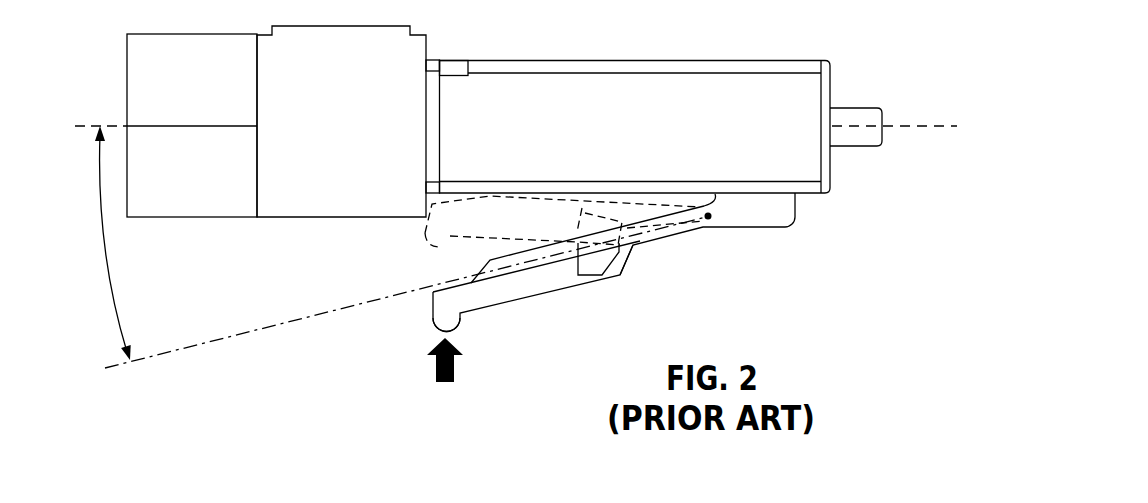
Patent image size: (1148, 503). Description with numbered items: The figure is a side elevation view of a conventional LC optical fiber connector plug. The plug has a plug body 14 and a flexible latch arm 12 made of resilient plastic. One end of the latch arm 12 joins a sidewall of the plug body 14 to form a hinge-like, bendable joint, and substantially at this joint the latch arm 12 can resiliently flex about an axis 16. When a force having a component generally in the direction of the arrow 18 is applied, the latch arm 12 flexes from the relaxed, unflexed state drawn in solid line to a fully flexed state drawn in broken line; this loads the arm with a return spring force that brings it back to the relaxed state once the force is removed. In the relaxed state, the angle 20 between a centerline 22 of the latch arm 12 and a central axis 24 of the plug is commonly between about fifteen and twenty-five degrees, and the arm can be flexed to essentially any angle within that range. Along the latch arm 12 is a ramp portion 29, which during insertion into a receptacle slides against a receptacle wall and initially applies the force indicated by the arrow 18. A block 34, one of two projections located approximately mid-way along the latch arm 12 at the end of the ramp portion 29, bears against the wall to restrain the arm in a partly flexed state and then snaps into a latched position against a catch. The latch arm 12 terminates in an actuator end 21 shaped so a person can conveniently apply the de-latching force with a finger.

The latch arm 12 is at (505, 322).
The plug body 14 is at (536, 60).
The axis 16 is at (710, 218).
The arrow 18 is at (433, 365).
The angle 20 is at (107, 262).
The actuator end 21 is at (442, 333).
The centerline 22 is at (238, 337).
The central axis 24 is at (907, 126).
The ramp portion 29 is at (635, 252).
The block 34 is at (573, 270).